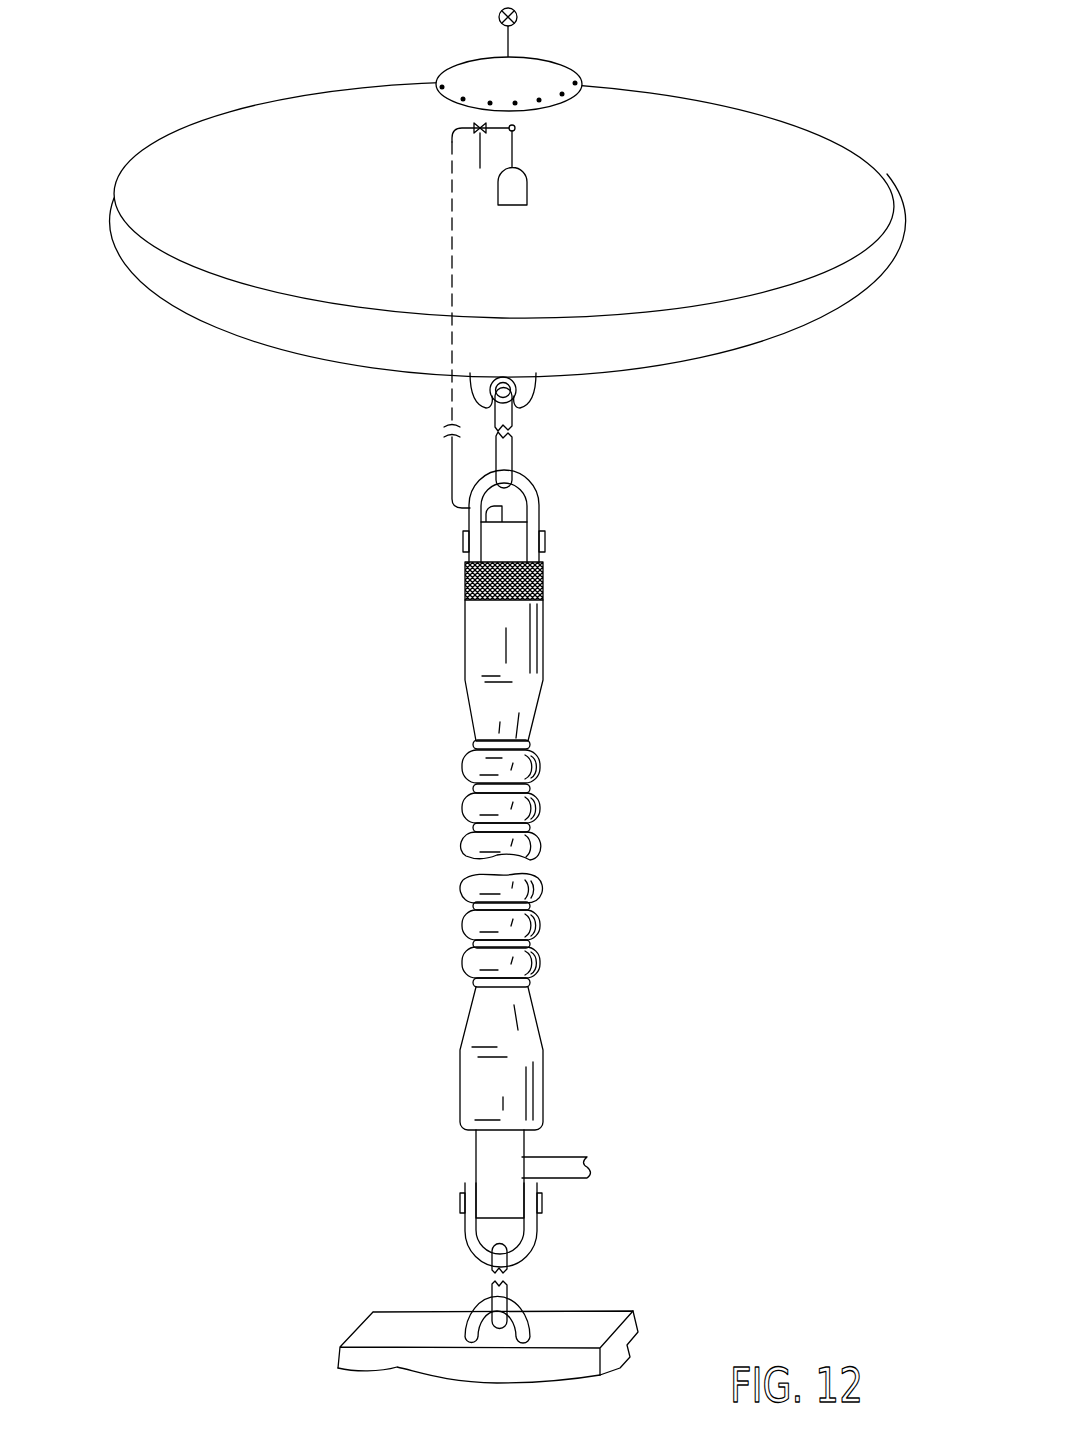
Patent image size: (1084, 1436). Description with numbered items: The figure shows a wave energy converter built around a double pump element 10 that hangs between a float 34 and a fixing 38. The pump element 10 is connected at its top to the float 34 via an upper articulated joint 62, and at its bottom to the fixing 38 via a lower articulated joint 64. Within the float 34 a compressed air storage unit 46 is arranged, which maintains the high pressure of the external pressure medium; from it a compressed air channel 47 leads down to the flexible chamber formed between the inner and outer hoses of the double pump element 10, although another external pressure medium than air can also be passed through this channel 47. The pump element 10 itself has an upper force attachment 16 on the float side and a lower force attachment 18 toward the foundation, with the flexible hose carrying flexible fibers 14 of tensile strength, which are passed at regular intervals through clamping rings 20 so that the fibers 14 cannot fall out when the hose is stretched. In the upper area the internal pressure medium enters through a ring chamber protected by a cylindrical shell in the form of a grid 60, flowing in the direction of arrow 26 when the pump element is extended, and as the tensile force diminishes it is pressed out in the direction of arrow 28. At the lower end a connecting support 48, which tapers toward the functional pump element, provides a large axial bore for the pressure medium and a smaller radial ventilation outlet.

The pumping element 10 is at (521, 899).
The flexible fibers 14 is at (533, 808).
The upper force attachment 16 is at (534, 673).
The lower force attachment 18 is at (537, 1058).
The ring 20 is at (530, 790).
The arrow 26 is at (440, 582).
The arrow 28 is at (660, 1163).
The float 34 is at (293, 281).
The fixing 38 is at (632, 1328).
The compressed air storage unit 46 is at (522, 194).
The compressed air channel 47 is at (447, 470).
The connecting support 48 is at (483, 1162).
The grid 60 is at (545, 574).
The upper articulated joint 62 is at (556, 435).
The lower articulated joint 64 is at (546, 1275).